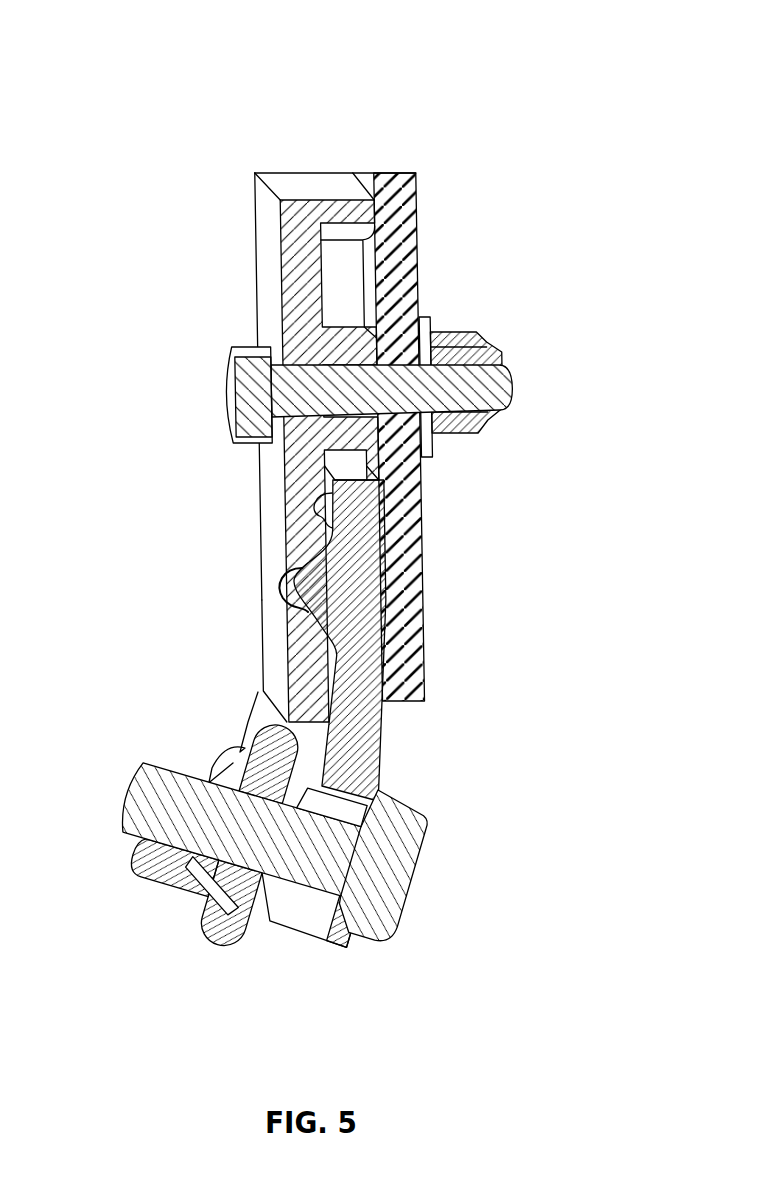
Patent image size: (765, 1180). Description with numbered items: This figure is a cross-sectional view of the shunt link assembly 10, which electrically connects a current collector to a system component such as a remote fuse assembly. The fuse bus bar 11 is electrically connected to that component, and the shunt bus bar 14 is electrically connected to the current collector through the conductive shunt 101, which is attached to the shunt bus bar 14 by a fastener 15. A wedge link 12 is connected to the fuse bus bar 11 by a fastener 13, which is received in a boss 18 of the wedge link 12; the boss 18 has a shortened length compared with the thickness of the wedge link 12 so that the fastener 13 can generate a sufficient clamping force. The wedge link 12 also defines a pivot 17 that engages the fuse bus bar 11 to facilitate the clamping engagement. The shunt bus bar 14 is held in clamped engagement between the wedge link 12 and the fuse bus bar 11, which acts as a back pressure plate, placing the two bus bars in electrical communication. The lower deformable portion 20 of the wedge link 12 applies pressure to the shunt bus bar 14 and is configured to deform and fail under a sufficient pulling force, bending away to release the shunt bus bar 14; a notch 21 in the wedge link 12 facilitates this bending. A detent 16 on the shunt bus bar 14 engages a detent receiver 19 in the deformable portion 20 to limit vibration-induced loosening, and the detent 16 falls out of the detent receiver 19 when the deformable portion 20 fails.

The shunt link assembly 10 is at (191, 100).
The fuse bus bar 11 is at (402, 193).
The wedge link 12 is at (262, 297).
The fastener 13 is at (490, 383).
The shunt bus bar 14 is at (367, 750).
The fastener 15 is at (393, 873).
The detent 16 is at (318, 596).
The pivot 17 is at (338, 191).
The boss 18 is at (337, 320).
The detent receiver 19 is at (293, 568).
The lower deformable portion 20 is at (273, 672).
The notch 21 is at (333, 520).
The shunt 101 is at (214, 930).